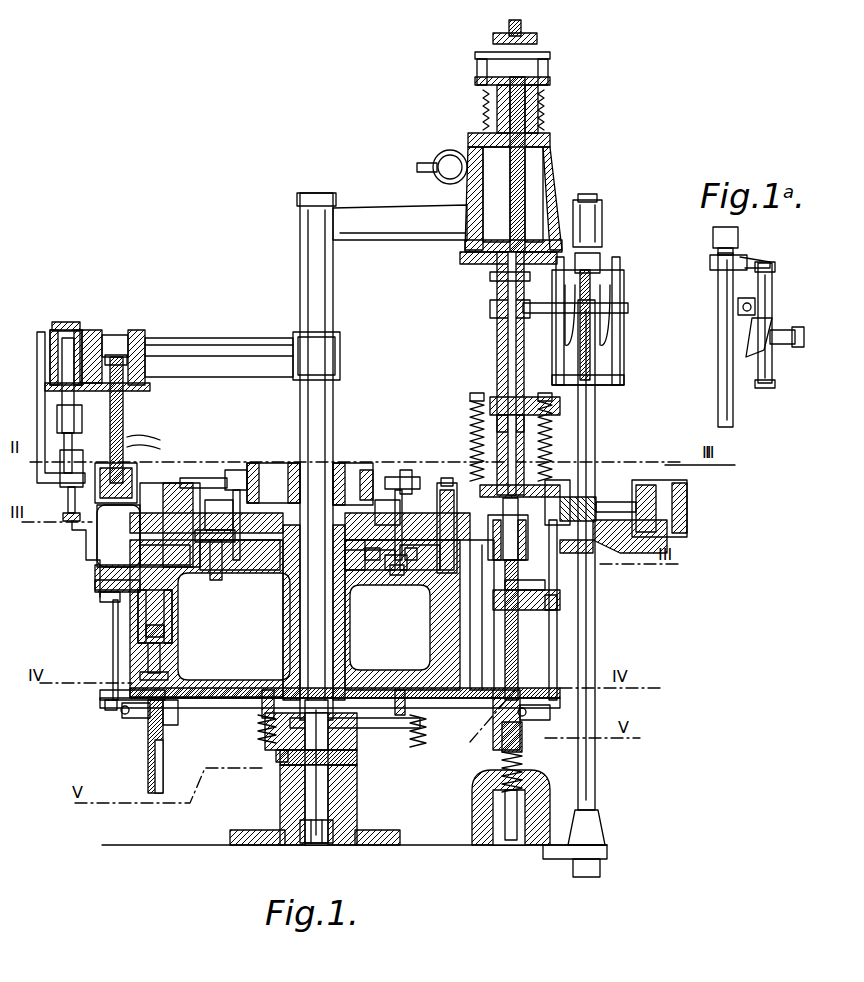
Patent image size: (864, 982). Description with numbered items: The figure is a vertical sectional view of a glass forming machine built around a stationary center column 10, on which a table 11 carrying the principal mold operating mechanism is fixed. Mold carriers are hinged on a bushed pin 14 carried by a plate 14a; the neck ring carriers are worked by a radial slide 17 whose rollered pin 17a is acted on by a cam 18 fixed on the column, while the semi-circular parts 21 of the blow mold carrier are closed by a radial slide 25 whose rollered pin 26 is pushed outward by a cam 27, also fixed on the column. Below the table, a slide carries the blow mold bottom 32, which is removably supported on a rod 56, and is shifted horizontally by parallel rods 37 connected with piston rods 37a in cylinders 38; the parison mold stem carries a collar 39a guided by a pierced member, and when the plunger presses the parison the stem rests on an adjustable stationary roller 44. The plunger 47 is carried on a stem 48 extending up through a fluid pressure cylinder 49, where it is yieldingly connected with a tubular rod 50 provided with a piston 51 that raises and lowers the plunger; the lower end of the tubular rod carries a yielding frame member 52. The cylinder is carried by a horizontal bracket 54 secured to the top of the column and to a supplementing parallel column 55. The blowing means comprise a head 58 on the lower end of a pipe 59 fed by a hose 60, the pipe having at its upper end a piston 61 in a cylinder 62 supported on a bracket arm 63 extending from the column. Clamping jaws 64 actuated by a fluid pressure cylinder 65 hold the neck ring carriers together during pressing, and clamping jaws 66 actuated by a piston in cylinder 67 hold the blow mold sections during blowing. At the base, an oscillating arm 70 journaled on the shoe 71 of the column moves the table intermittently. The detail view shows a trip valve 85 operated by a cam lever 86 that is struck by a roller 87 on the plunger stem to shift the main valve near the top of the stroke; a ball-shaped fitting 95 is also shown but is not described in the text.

In FIG. 1, the center column 10 is at (325, 410).
In FIG. 1, the table 11 is at (432, 643).
In FIG. 1, the pin 14 is at (446, 483).
In FIG. 1, the plate 14a is at (397, 575).
In FIG. 1, the radial slide 17 is at (218, 547).
In FIG. 1, the rollered pin 17a is at (392, 480).
In FIG. 1, the cam 18 is at (352, 485).
In FIG. 1, the semi-circular parts 21 is at (534, 548).
In FIG. 1, the radial slide 25 is at (410, 560).
In FIG. 1, the rollered pin 26 is at (374, 552).
In FIG. 1, the cam 27 is at (300, 585).
In FIG. 1, the blow mold bottom 32 is at (97, 583).
In FIG. 1, the parallel rods 37 is at (390, 730).
In FIG. 1, the piston rods 37a is at (278, 760).
In FIG. 1, the cylinders 38 is at (360, 775).
In FIG. 1, the collar 39a is at (560, 600).
In FIG. 1, the stationary roller 44 is at (520, 742).
In FIG. 1, the plunger 47 is at (525, 497).
In FIG. 1, the stem 48 is at (510, 357).
In FIG. 1, the fluid pressure cylinder 49 is at (552, 175).
In FIG. 1, the tubular rod 50 is at (497, 322).
In FIG. 1, the piston 51 is at (582, 200).
In FIG. 1, the yielding frame member 52 is at (490, 470).
In FIG. 1, the horizontal bracket 54 is at (370, 222).
In FIG. 1, the parallel column 55 is at (590, 410).
In FIG. 1A, the parallel column 55 is at (737, 405).
In FIG. 1, the rod 56 is at (113, 662).
In FIG. 1, the blow head 58 is at (150, 485).
In FIG. 1, the pipe 59 is at (125, 415).
In FIG. 1, the hose 60 is at (160, 440).
In FIG. 1, the piston 61 is at (120, 357).
In FIG. 1, the cylinder 62 is at (115, 337).
In FIG. 1, the bracket arm 63 is at (228, 352).
In FIG. 1, the clamping jaws 64 is at (567, 497).
In FIG. 1, the fluid pressure cylinder 65 is at (660, 524).
In FIG. 1, the clamping jaws 66 is at (68, 523).
In FIG. 1, the fluid pressure cylinder 67 is at (85, 335).
In FIG. 1, the oscillating arm 70 is at (280, 790).
In FIG. 1, the shoe 71 is at (353, 843).
In FIG. 1A, the trip valve 85 is at (797, 348).
In FIG. 1A, the cam lever 86 is at (745, 340).
In FIG. 1A, the roller 87 is at (740, 303).
In FIG. 1, the ball 95 is at (448, 162).